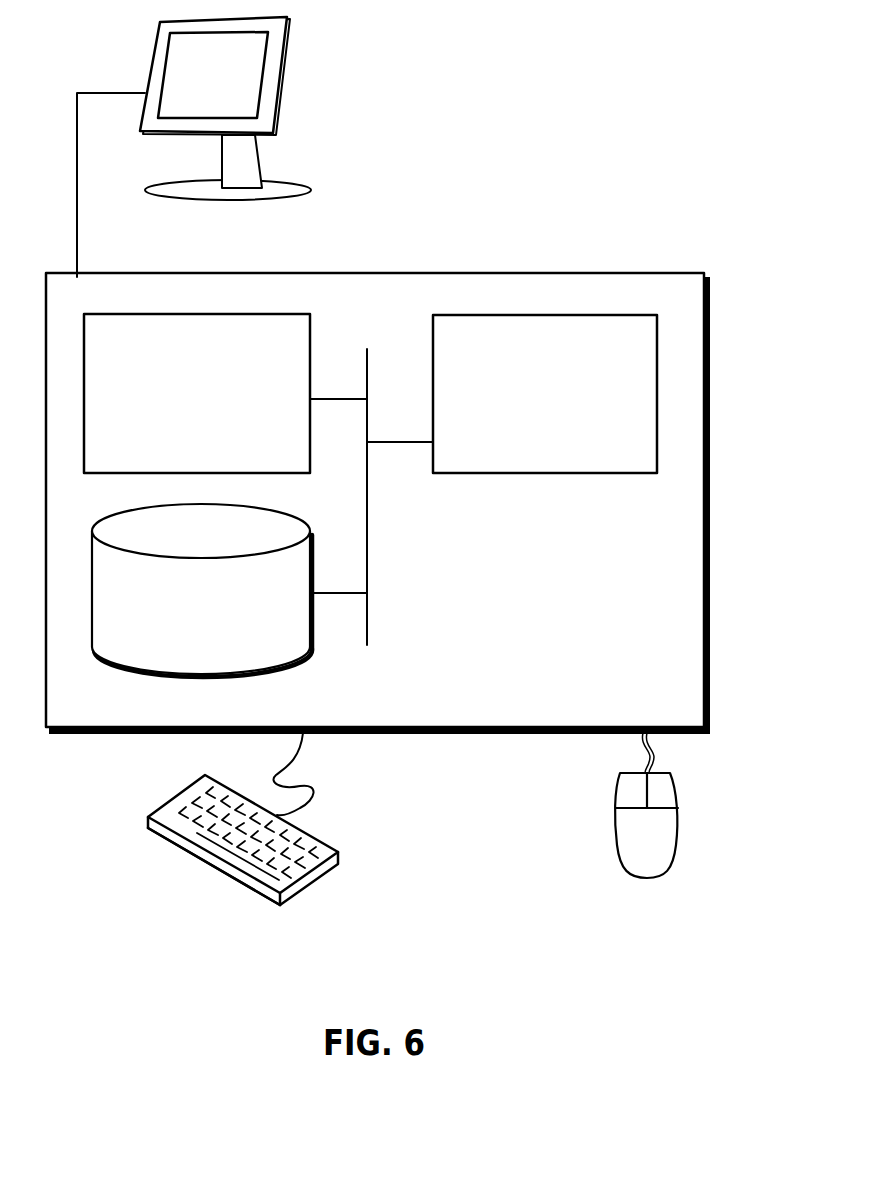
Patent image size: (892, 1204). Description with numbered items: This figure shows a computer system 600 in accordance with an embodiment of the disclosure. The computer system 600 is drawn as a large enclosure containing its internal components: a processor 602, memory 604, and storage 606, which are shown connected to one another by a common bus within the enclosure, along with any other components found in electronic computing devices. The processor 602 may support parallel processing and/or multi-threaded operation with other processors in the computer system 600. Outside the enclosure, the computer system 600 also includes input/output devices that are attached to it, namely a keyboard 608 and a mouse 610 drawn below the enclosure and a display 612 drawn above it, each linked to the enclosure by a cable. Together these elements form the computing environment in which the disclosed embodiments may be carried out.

The computer system 600 is at (422, 250).
The processor 602 is at (545, 394).
The memory 604 is at (197, 393).
The storage 606 is at (202, 590).
The keyboard 608 is at (167, 840).
The mouse 610 is at (646, 805).
The display 612 is at (194, 147).